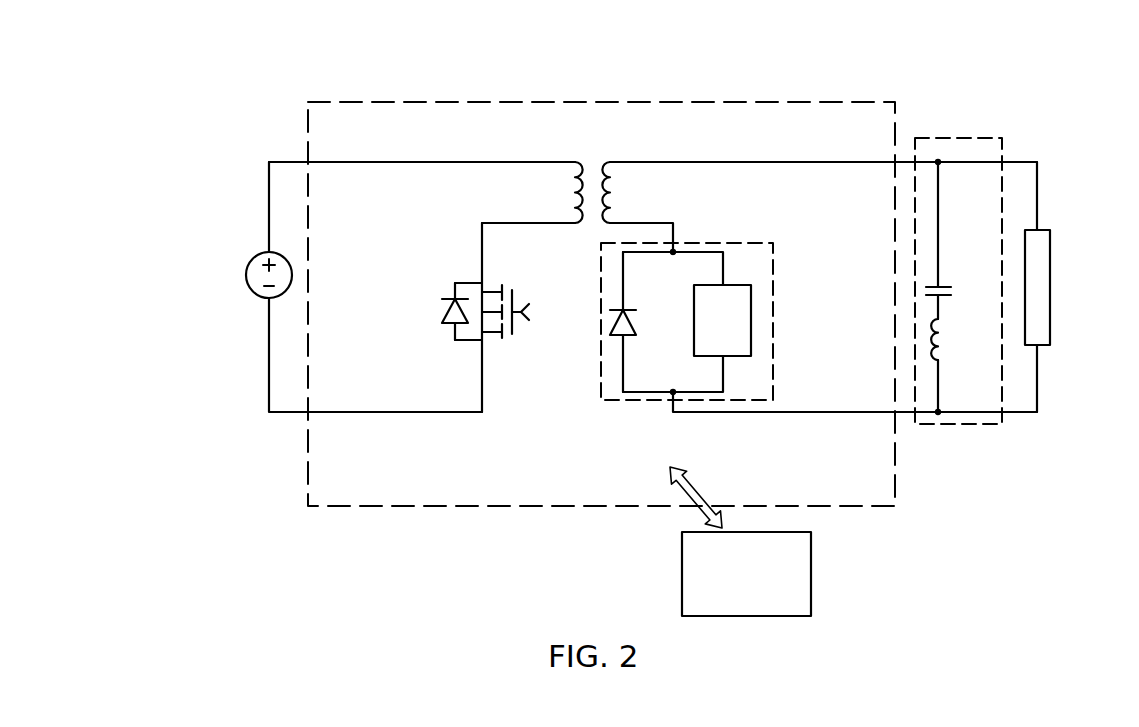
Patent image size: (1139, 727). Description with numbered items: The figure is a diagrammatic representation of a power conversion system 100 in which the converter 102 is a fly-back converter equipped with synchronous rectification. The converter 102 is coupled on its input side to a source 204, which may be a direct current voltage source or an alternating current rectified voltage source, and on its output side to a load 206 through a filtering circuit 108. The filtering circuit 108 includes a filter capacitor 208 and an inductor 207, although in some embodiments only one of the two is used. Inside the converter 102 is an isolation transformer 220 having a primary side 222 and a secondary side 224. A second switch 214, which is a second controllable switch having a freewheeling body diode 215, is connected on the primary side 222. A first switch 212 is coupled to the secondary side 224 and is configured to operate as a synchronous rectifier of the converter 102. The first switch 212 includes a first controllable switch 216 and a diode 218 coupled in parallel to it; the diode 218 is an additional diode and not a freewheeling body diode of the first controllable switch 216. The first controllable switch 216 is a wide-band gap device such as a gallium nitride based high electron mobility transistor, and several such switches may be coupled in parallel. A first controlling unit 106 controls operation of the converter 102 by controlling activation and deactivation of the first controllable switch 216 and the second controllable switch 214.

The power conversion system 100 is at (1023, 24).
The converter 102 is at (529, 102).
The first controlling unit 106 is at (812, 572).
The filtering circuit 108 is at (993, 276).
The source 204 is at (246, 275).
The load 206 is at (1043, 230).
The inductor 207 is at (941, 335).
The filter capacitor 208 is at (943, 283).
The first switch 212 is at (694, 321).
The second switch 214 is at (452, 338).
The freewheeling body diode 215 is at (441, 306).
The first controllable switch 216 is at (752, 320).
The diode 218 is at (610, 322).
The isolation transformer 220 is at (593, 168).
The primary side 222 is at (577, 218).
The secondary side 224 is at (610, 188).